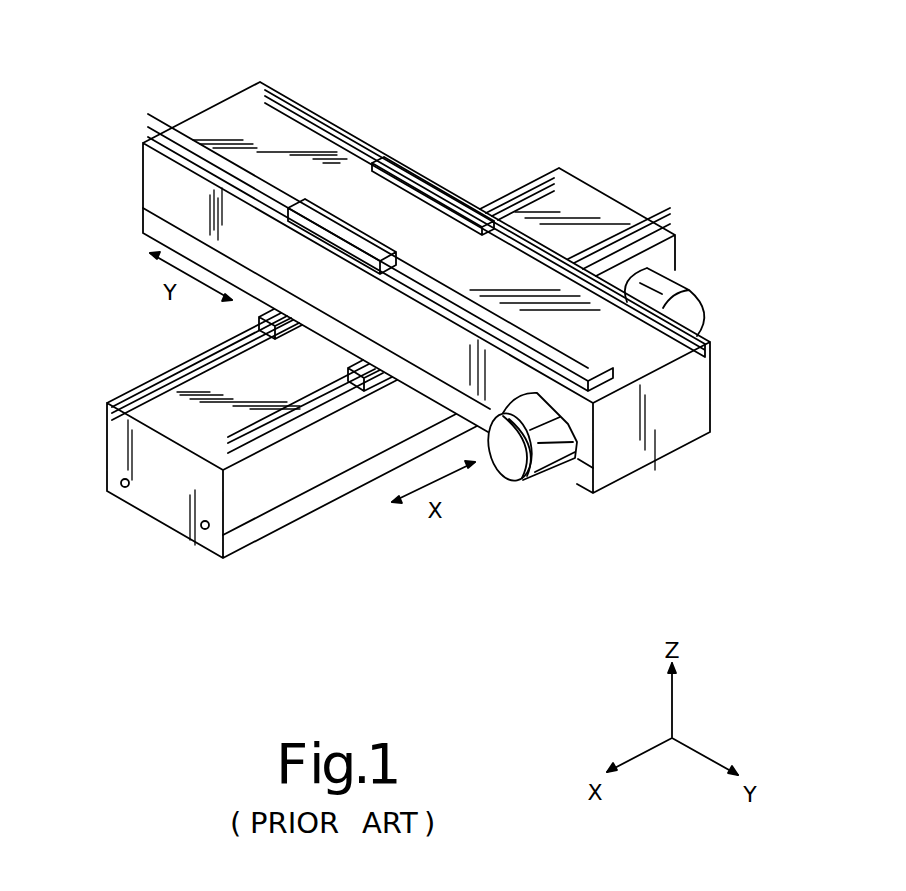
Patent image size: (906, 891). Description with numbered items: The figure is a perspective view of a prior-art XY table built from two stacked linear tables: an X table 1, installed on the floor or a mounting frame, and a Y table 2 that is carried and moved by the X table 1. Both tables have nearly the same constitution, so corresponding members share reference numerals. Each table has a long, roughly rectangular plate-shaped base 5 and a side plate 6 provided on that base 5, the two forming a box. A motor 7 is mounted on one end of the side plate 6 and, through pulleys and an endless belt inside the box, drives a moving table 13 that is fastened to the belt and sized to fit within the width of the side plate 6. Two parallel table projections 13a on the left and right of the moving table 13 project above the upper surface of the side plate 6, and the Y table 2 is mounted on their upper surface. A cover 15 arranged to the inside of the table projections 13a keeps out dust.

The X table 1 is at (150, 521).
The Y table 2 is at (202, 100).
The base 5 is at (150, 230).
The side plate 6 is at (150, 152).
The motor 7 is at (690, 312).
The moving table 13 is at (456, 191).
The table projections 13a is at (395, 167).
The cover 15 is at (605, 217).